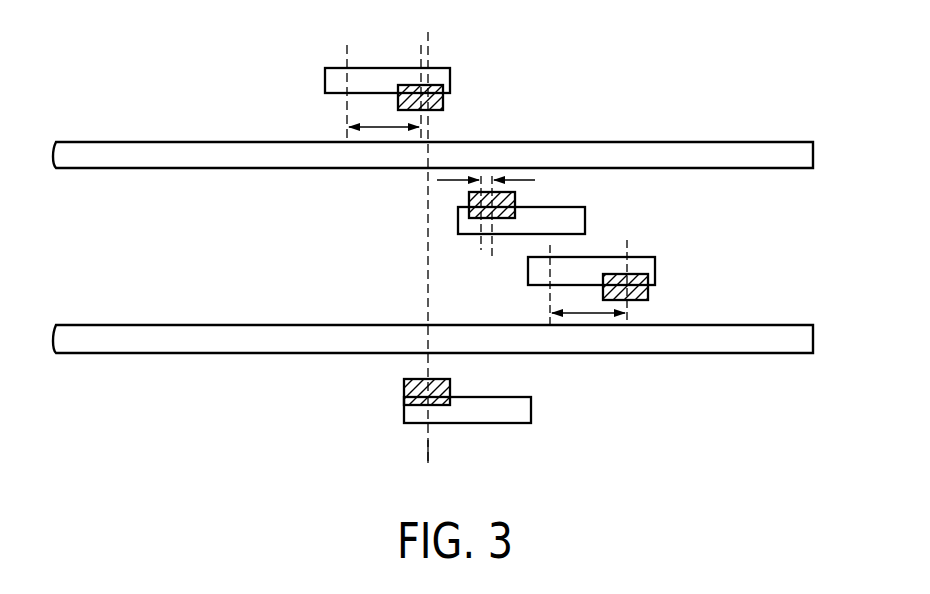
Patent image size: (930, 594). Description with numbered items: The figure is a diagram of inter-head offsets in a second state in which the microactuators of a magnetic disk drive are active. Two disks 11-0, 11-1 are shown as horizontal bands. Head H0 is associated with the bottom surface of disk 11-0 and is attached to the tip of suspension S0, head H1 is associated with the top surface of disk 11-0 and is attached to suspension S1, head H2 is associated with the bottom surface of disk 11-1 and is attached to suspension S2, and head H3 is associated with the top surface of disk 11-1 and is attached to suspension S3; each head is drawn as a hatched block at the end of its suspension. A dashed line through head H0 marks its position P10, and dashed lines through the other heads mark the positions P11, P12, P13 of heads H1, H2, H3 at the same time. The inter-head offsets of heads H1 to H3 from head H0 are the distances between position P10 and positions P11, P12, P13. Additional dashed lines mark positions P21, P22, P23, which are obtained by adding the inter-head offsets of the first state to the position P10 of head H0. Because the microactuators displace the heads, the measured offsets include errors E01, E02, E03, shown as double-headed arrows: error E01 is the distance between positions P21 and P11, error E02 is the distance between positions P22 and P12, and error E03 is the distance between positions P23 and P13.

The disk 11-1 is at (766, 143).
The disk 11-0 is at (766, 325).
The suspension S3 is at (325, 80).
The head H3 is at (443, 103).
The position P23 is at (347, 48).
The position of head H3 P13 is at (421, 50).
The error E03 is at (384, 127).
The suspension S2 is at (585, 215).
The head H2 is at (515, 200).
The position P22 is at (481, 242).
The position of head H2 P12 is at (492, 258).
The error E02 is at (488, 182).
The suspension S1 is at (655, 270).
The head H1 is at (648, 292).
The position P21 is at (552, 248).
The position of head H1 P11 is at (628, 245).
The error E01 is at (584, 311).
The suspension S0 is at (531, 410).
The head H0 is at (450, 385).
The position of head H0 P10 is at (428, 445).